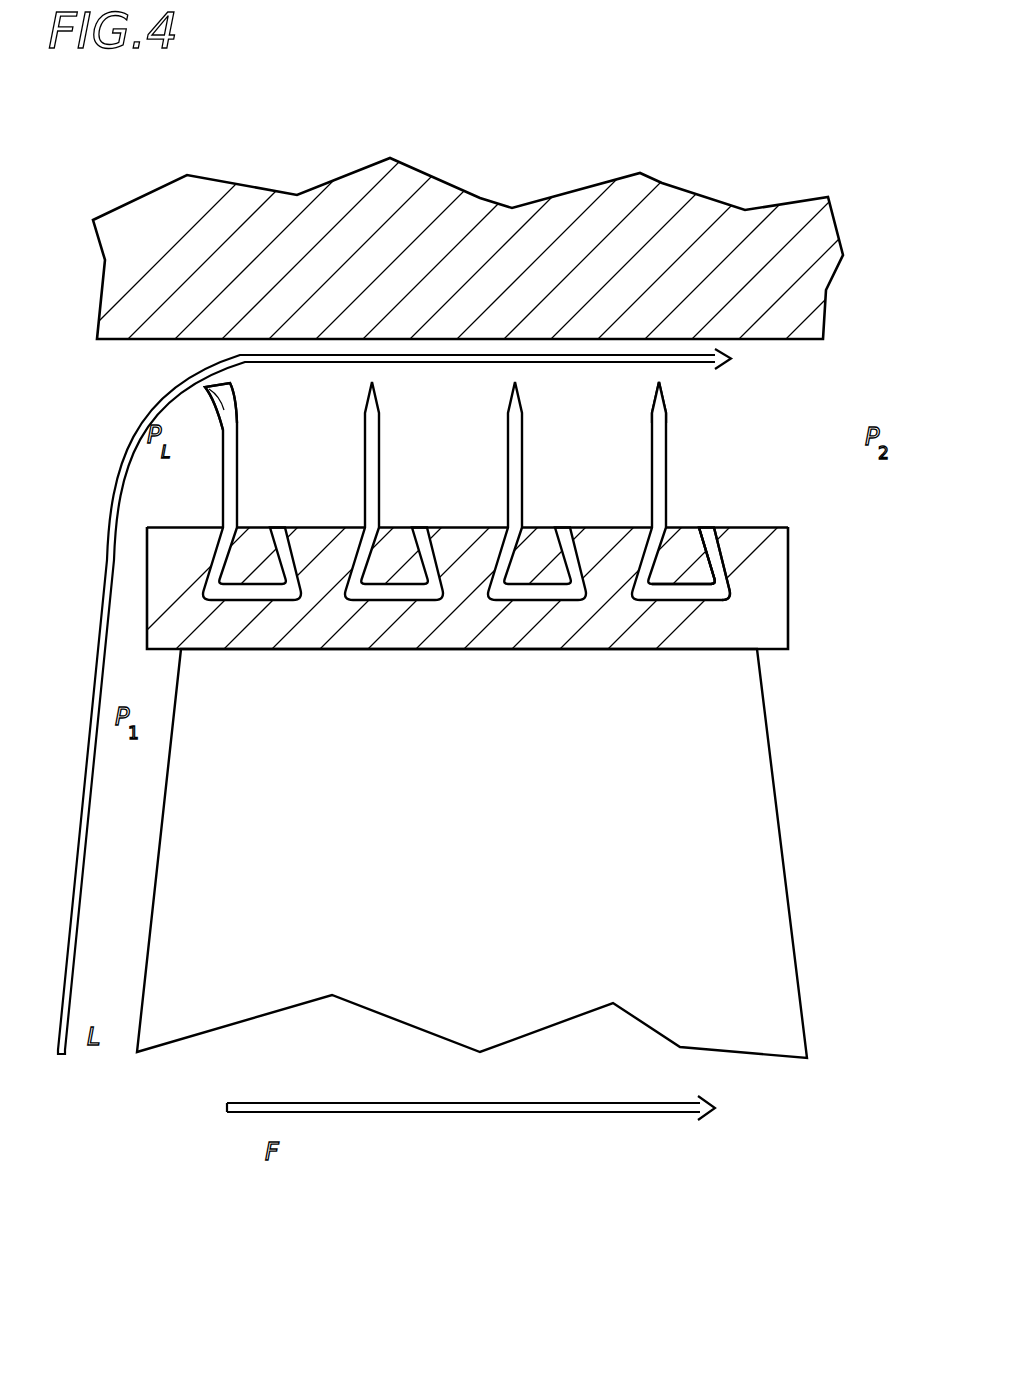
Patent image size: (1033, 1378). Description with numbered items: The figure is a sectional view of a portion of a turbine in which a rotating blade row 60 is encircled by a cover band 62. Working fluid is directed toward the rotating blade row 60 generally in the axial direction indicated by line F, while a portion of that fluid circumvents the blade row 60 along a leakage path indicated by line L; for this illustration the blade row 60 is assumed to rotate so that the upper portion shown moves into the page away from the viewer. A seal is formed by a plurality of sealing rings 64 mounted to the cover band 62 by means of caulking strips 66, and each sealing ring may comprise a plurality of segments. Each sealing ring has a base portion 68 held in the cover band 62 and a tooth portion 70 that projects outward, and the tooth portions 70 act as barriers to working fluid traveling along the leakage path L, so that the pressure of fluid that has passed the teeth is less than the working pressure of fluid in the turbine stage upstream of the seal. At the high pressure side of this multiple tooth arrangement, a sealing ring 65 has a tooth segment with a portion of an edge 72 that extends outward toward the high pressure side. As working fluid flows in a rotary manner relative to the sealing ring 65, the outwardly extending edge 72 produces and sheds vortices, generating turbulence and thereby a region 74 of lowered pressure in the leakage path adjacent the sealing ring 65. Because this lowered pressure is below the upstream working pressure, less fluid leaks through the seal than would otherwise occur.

The rotating blade row 60 is at (470, 829).
The cover band 62 is at (778, 618).
The sealing rings 64 is at (698, 467).
The sealing ring 65 is at (256, 484).
The caulking strips 66 is at (680, 543).
The base portion 68 is at (723, 575).
The tooth portion 70 is at (660, 433).
The edge 72 is at (230, 382).
The region of lowered pressure 74 is at (137, 342).